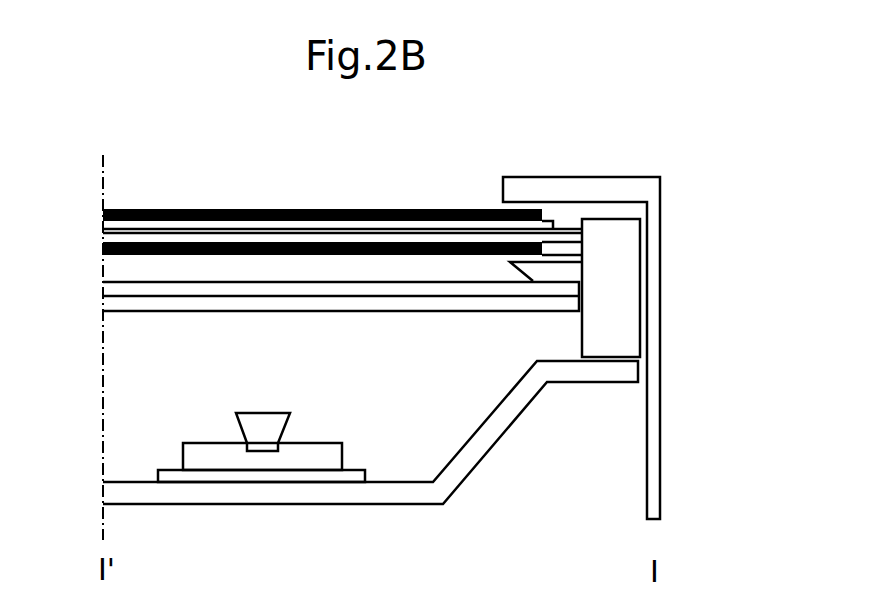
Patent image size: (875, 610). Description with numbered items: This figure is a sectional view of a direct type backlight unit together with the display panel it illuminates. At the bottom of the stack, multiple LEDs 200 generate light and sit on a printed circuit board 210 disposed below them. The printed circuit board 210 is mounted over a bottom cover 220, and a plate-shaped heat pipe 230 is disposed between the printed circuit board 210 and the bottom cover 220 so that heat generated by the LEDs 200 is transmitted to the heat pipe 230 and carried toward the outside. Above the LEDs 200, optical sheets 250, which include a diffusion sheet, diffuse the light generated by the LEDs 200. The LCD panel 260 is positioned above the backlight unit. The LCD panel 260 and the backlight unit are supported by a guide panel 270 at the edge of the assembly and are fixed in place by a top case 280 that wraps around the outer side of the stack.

The LED 200 is at (258, 447).
The printed circuit board 210 is at (305, 462).
The bottom cover 220 is at (483, 443).
The heat pipe 230 is at (370, 478).
The optical sheets 250 is at (97, 280).
The LCD panel 260 is at (97, 212).
The guide panel 270 is at (628, 286).
The top case 280 is at (655, 368).